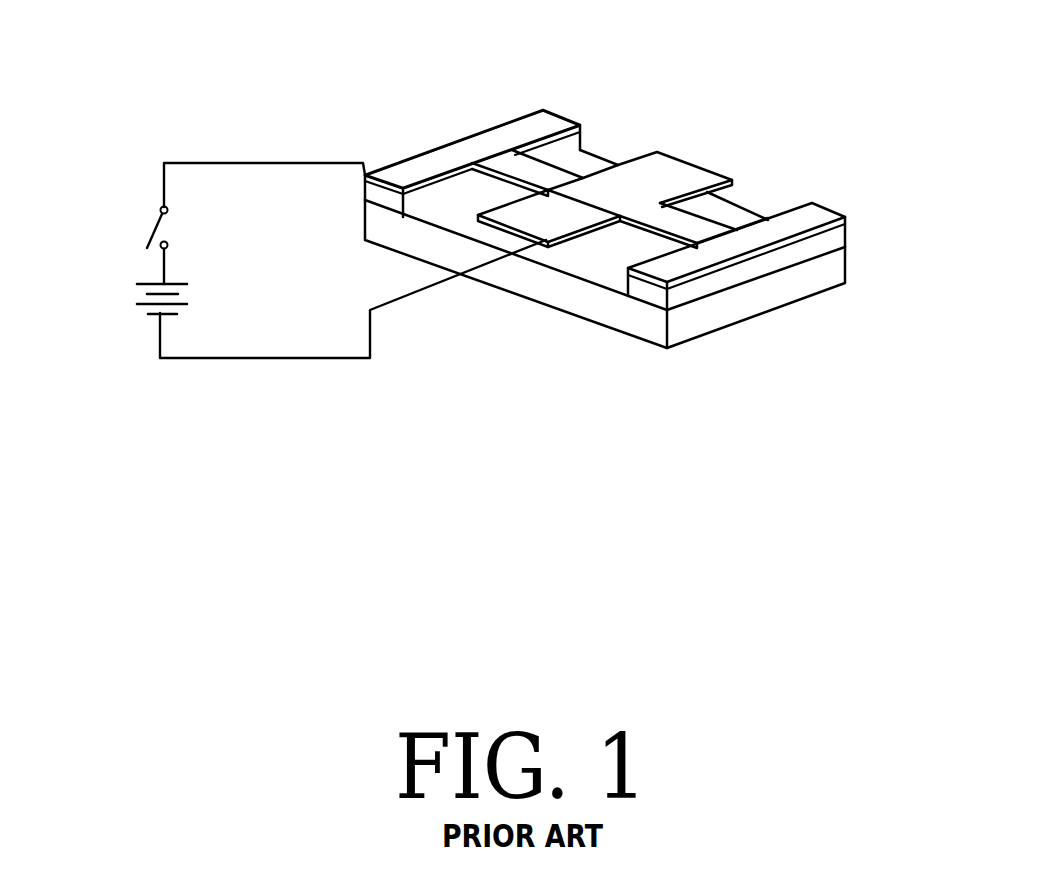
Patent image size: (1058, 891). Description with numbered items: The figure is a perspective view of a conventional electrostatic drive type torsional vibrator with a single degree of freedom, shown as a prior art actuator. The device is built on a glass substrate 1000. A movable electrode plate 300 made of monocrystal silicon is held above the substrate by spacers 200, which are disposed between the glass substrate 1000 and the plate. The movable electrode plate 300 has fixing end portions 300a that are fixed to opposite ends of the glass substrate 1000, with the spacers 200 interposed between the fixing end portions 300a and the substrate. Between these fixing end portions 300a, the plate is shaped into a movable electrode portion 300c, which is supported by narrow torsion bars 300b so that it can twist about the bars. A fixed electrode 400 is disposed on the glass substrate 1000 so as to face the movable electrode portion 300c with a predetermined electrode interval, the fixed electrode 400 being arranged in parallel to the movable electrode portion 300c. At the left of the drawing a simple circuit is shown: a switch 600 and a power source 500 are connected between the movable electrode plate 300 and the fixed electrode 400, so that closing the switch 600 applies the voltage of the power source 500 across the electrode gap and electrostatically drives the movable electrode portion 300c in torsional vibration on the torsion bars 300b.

The glass substrate 1000 is at (606, 308).
The fixed electrode 400 is at (550, 256).
The spacers 200 is at (376, 197).
The movable electrode plate 300 is at (776, 118).
The fixing end portions 300a is at (582, 127).
The narrow torsion bars 300b is at (533, 172).
The movable electrode portion 300c is at (666, 170).
The power source 500 is at (150, 309).
The switch 600 is at (154, 226).